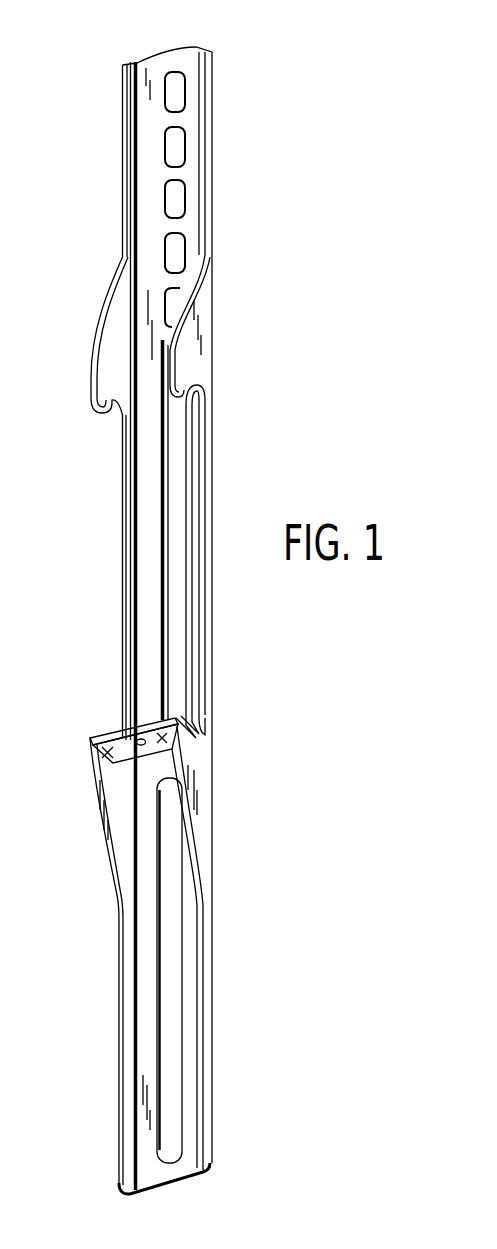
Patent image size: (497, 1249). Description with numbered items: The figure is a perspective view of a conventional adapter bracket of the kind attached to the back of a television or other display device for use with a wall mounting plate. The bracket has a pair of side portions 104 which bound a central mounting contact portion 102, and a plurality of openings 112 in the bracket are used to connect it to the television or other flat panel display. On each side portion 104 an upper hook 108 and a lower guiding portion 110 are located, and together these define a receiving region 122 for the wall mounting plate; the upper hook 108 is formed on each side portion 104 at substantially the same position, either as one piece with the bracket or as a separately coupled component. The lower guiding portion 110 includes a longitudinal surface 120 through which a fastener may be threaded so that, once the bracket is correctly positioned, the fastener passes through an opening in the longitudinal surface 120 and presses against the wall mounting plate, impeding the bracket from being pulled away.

The mounting contact portion 102 is at (190, 52).
The side portion 104 is at (124, 215).
The upper hook 108 is at (200, 380).
The lower guiding portion 110 is at (208, 722).
The openings 112 is at (173, 195).
The longitudinal surface 120 is at (115, 740).
The receiving region 122 is at (120, 530).